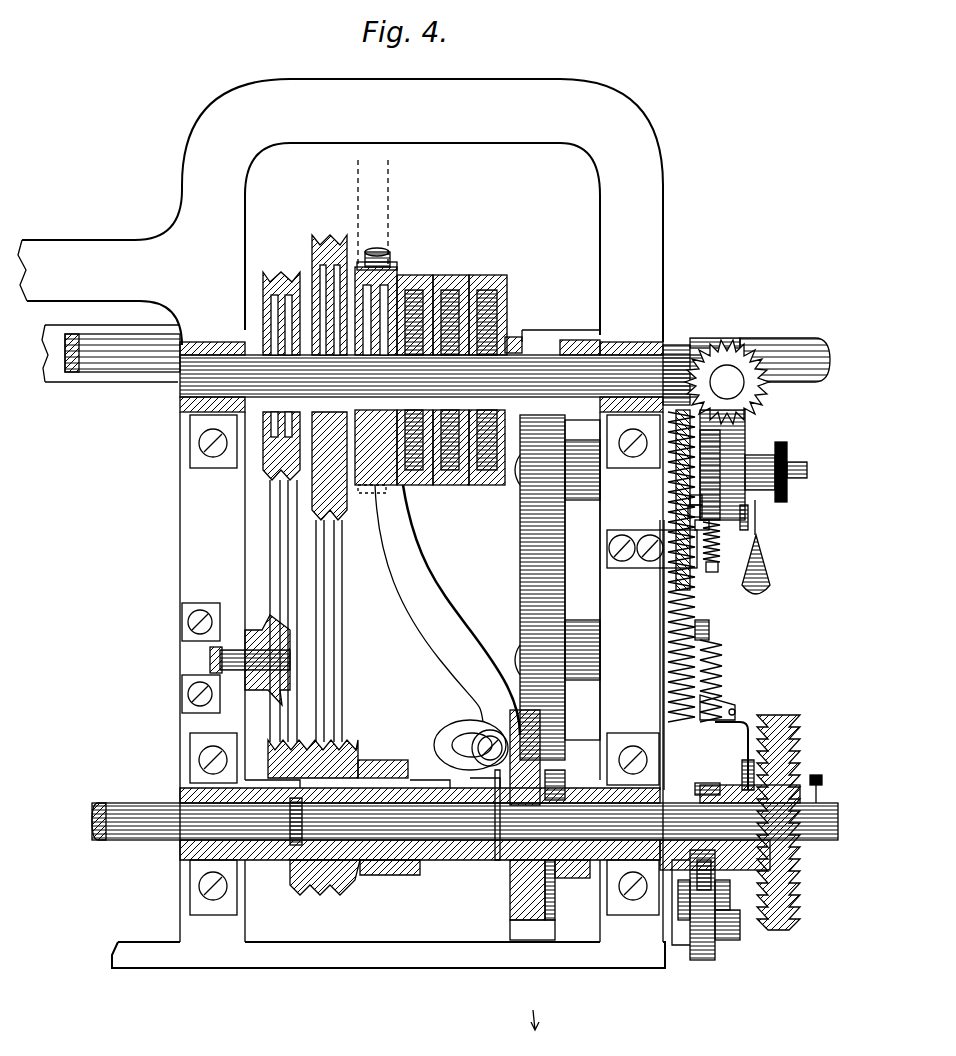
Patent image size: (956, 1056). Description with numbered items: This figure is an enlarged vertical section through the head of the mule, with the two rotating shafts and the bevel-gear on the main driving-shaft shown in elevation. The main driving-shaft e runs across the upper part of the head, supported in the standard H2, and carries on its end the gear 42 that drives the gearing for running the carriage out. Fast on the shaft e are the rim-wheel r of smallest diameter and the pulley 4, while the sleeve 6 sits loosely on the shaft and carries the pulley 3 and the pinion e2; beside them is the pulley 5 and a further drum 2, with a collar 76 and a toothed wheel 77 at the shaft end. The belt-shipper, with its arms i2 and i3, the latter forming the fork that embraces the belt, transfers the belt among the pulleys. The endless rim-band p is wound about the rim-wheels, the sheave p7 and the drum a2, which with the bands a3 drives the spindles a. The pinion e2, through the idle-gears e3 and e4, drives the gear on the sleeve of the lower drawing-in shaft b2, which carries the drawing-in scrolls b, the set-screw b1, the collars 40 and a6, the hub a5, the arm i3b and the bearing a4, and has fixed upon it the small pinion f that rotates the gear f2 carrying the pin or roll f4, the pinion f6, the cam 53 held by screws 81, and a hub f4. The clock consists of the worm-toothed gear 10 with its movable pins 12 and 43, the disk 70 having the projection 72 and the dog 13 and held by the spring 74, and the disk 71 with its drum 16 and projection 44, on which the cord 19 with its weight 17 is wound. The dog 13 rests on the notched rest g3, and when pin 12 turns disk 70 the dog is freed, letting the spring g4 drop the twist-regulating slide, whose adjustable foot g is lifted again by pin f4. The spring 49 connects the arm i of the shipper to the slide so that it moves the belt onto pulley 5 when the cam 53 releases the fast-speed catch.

The gear 42 is at (119, 268).
The frame standard H2 is at (212, 677).
The main driving-shaft e is at (447, 373).
The collar 76 is at (690, 350).
The ratchet wheel 77 is at (740, 350).
The rim-wheel r is at (281, 367).
The rim-band p is at (300, 488).
The sheave p7 is at (260, 625).
The fork of the shipper-lever i3 is at (360, 268).
The shipper arm i2 is at (457, 514).
The pulley 5 is at (388, 272).
The pulley 4 is at (420, 285).
The pulley 3 is at (448, 285).
The drum 2 is at (480, 283).
The sleeve 6 is at (510, 338).
The pinion e2 is at (540, 345).
The idle-gear e3 is at (520, 508).
The idle-gear e4 is at (565, 590).
The spindles a is at (348, 745).
The drum a2 is at (365, 775).
The bands a3 is at (343, 878).
The annular groove 40 is at (420, 860).
The sleeve arm i3b is at (498, 880).
The hub a5 is at (553, 885).
The collar a6 is at (575, 875).
The bearing a4 is at (540, 918).
The drawing-in shaft b2 is at (465, 810).
The drawing-in scrolls b is at (781, 822).
The set screw b1 is at (819, 785).
The disk 71 is at (745, 440).
The disk 70 is at (687, 500).
The worm-toothed gear 10 is at (710, 475).
The drum 16 is at (770, 458).
The cord 19 is at (756, 500).
The projection 44 is at (748, 516).
The movable pin 43 is at (690, 491).
The movable pin 12 is at (690, 505).
The dog 13 is at (696, 523).
The projection 72 is at (720, 525).
The spring 74 is at (712, 572).
The weight 17 is at (762, 550).
The spring 49 is at (700, 650).
The rest g3 is at (660, 565).
The spring g4 is at (660, 655).
The arm of the belt-shipper i is at (721, 707).
The adjustable foot g is at (750, 730).
The pinion f is at (652, 870).
The cam 53 is at (690, 925).
The pinion f6 is at (712, 870).
The screws 81 is at (726, 900).
The pin or roll f4 is at (727, 944).
The gear f2 is at (680, 927).